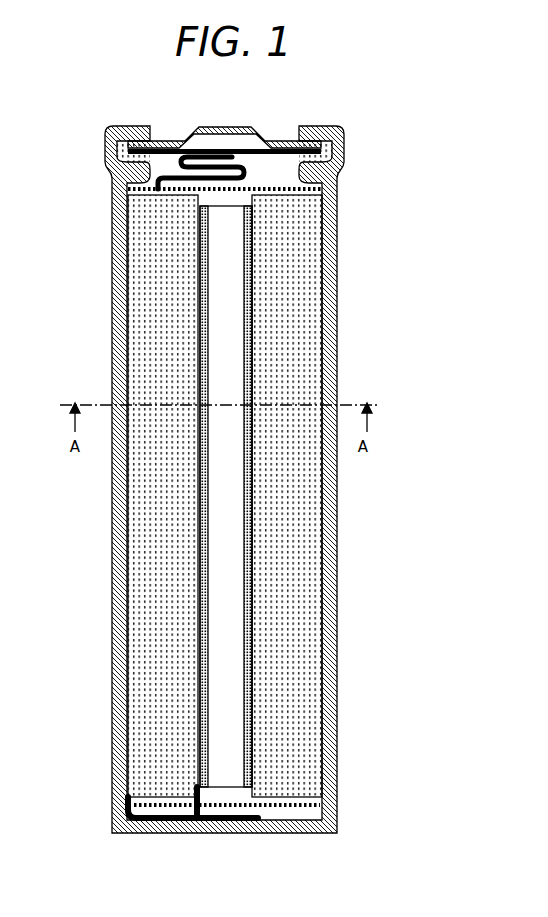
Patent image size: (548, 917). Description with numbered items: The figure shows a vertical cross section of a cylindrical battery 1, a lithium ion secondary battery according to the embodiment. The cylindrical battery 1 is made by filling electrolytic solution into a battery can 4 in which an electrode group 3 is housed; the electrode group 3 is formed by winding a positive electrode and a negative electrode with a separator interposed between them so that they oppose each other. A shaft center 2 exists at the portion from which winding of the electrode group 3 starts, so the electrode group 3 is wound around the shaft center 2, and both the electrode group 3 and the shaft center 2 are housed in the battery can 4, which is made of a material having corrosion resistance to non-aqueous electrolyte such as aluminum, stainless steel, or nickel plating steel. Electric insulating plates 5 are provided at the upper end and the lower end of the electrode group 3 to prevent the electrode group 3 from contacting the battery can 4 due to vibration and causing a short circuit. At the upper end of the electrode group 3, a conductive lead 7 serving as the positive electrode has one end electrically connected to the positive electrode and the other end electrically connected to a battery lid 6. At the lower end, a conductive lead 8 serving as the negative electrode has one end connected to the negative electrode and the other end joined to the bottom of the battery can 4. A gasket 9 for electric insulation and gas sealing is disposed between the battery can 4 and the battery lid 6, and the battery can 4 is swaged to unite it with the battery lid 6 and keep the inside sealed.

The cylindrical battery 1 is at (247, 872).
The shaft center 2 is at (305, 496).
The electrode group 3 is at (270, 496).
The battery can 4 is at (258, 479).
The electric insulating plates 5 is at (219, 497).
The battery lid 6 is at (224, 113).
The conductive lead 7 is at (216, 140).
The conductive lead 8 is at (193, 831).
The gasket 9 is at (202, 123).